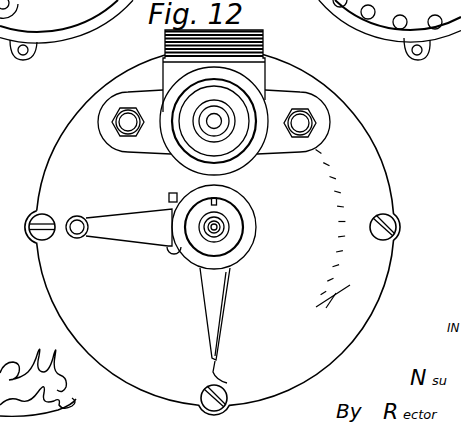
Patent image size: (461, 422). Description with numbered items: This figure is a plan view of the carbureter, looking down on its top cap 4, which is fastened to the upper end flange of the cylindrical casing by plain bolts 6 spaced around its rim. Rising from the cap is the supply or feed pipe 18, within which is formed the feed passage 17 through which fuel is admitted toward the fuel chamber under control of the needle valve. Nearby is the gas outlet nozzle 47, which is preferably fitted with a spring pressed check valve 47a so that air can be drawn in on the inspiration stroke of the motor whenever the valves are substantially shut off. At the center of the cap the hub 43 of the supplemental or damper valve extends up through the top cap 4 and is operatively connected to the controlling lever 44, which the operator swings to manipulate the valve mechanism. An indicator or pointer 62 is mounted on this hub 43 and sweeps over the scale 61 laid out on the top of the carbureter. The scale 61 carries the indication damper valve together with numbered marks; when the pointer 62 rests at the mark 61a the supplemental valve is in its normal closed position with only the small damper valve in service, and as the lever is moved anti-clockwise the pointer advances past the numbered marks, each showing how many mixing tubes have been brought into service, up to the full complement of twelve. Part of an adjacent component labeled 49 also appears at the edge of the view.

The top cap 4 is at (212, 235).
The plain bolts 6 is at (43, 220).
The feed passage 17 is at (230, 227).
The supply or feed pipe 18 is at (225, 220).
The hub 43 is at (230, 247).
The controlling lever 44 is at (110, 226).
The gas outlet nozzle 47 is at (255, 72).
The spring pressed check valve 47a is at (197, 143).
The ring 49 is at (66, 30).
The scale 61 is at (347, 202).
The mark 61a is at (233, 375).
The indicator or pointer 62 is at (217, 302).